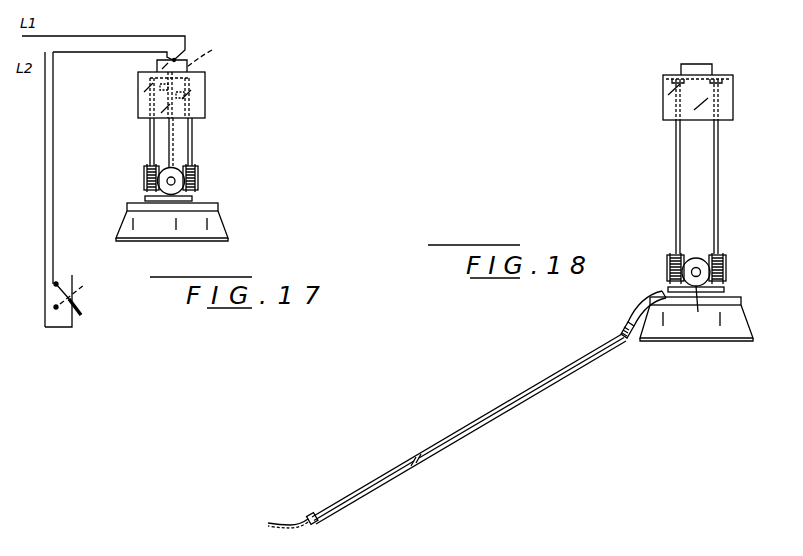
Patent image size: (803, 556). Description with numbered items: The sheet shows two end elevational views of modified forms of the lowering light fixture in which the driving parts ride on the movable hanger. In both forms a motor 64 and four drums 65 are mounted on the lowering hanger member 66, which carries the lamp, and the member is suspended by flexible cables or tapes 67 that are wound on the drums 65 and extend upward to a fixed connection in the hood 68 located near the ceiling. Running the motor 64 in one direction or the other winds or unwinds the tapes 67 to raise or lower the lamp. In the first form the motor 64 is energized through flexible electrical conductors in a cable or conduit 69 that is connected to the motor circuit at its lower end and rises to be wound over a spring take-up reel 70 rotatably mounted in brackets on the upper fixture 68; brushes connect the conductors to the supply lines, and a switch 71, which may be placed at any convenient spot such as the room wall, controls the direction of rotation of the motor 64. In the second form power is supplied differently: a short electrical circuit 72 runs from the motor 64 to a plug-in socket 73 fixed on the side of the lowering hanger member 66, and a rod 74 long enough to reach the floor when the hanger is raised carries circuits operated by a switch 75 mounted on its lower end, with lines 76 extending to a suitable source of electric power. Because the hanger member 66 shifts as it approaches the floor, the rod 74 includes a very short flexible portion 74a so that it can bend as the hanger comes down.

In FIG. 17, the motor 64 is at (178, 187).
In FIG. 18, the motor 64 is at (702, 262).
In FIG. 17, the drums 65 is at (144, 174).
In FIG. 18, the drums 65 is at (667, 266).
In FIG. 17, the lowering hanger member 66 is at (207, 228).
In FIG. 18, the lowering hanger member 66 is at (741, 312).
In FIG. 17, the flexible cables or tapes 67 is at (150, 132).
In FIG. 18, the flexible cables or tapes 67 is at (680, 175).
In FIG. 17, the hood 68 is at (205, 85).
In FIG. 18, the hood 68 is at (733, 102).
In FIG. 17, the cable or conduit 69 is at (173, 145).
In FIG. 17, the spring take-up reel 70 is at (208, 52).
In FIG. 17, the switch 71 is at (76, 303).
In FIG. 18, the short electrical circuit 72 is at (700, 307).
In FIG. 18, the plug-in socket 73 is at (628, 320).
In FIG. 18, the rod 74 is at (486, 418).
In FIG. 18, the flexible portion 74a is at (627, 340).
In FIG. 18, the switch 75 is at (320, 506).
In FIG. 18, the lines 76 is at (284, 525).